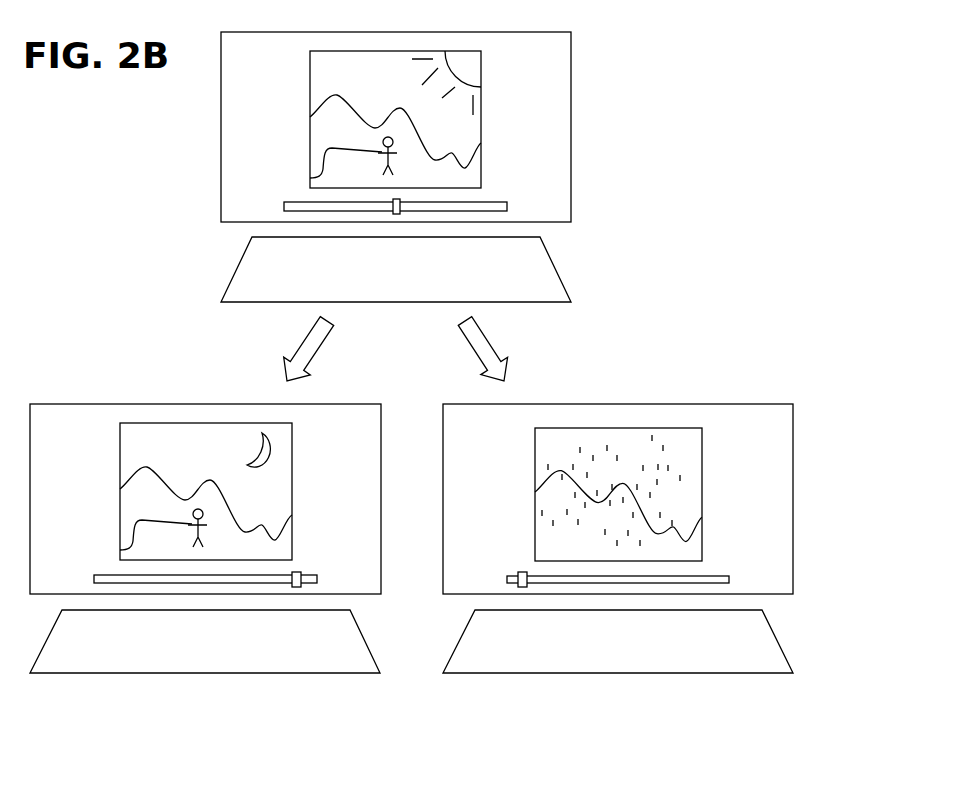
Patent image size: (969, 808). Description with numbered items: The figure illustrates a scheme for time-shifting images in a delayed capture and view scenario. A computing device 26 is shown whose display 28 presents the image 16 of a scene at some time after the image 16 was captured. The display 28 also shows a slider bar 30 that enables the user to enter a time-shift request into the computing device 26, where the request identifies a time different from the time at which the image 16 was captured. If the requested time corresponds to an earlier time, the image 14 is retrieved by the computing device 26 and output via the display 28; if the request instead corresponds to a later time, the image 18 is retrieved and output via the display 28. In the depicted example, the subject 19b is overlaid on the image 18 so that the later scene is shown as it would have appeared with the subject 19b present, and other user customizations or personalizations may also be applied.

The image 14 is at (702, 483).
The image 16 is at (481, 118).
The image 18 is at (292, 490).
The subject 19b is at (310, 178).
The computing device 26 is at (605, 103).
The display 28 is at (221, 167).
The slider bar 30 is at (508, 178).